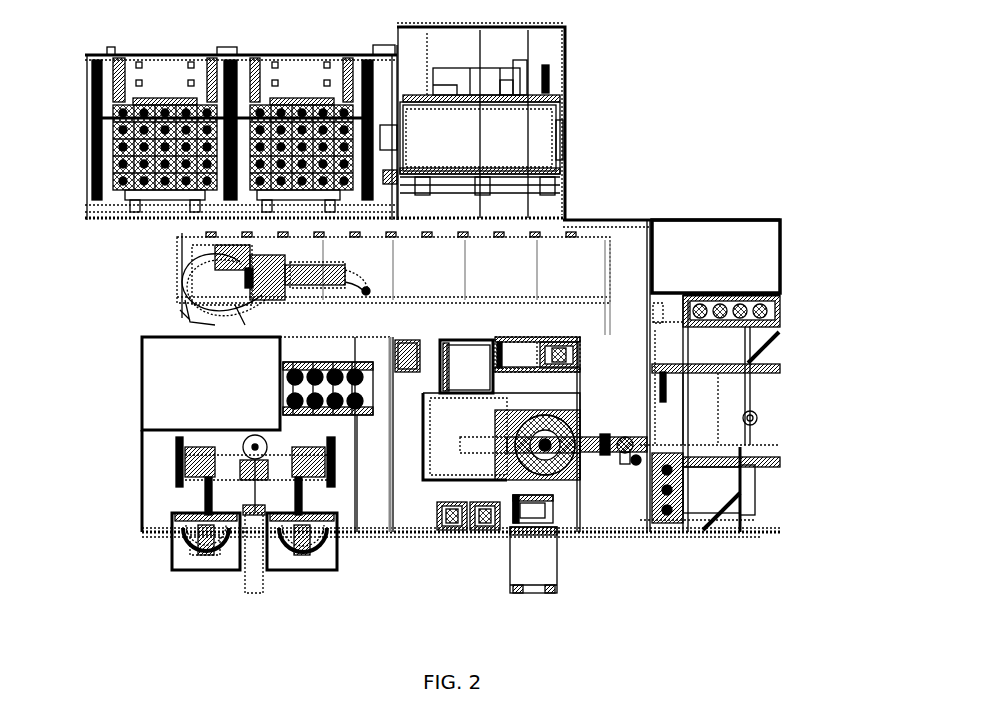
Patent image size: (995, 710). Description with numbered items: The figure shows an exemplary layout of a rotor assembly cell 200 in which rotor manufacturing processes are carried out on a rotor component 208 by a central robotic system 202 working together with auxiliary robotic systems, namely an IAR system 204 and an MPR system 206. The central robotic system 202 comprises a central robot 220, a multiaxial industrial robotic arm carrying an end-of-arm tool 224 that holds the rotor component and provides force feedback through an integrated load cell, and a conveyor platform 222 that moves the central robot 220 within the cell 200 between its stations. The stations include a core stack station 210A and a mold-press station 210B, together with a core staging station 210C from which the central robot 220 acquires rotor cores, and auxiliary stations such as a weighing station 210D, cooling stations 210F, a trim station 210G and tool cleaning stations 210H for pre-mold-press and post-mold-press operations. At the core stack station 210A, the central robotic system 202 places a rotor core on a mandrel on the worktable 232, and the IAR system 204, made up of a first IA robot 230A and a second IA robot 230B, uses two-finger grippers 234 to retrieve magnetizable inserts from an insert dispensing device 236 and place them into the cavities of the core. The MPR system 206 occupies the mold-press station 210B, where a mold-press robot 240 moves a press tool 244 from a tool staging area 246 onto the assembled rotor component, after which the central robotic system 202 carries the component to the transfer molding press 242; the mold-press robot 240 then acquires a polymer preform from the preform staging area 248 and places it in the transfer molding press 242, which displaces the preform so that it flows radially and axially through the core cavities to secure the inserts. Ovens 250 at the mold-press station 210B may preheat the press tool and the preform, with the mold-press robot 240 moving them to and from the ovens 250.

The rotor assembly cell 200 is at (790, 44).
The central robotic system 202 is at (162, 268).
The insert assembly robotic (IAR) system 204 is at (200, 440).
The mold-press robotic (MPR) system 206 is at (607, 463).
The rotor component 208 is at (357, 472).
The core stack station 210A is at (138, 497).
The mold-press station 210B is at (653, 372).
The core staging station 210C is at (165, 72).
The weighing station 210D is at (533, 127).
The cooling station 210F is at (360, 363).
The trim station 210G is at (670, 312).
The tool cleaning station 210H is at (715, 484).
The central robot 220 is at (277, 300).
The conveyor platform 222 is at (573, 323).
The end-of-arm tool 224 is at (332, 285).
The first insert assembly (IA) robot 230A is at (183, 495).
The second insert assembly (IA) robot 230B is at (308, 486).
The worktable 232 is at (247, 437).
The two-finger gripper 234 is at (197, 507).
The insert dispensing device 236 is at (212, 572).
The mold-press robot 240 is at (580, 433).
The transfer molding press 242 is at (733, 402).
The press tool 244 is at (578, 355).
The tool staging area 246 is at (623, 427).
The preform staging area 248 is at (550, 510).
The oven 250 is at (482, 340).